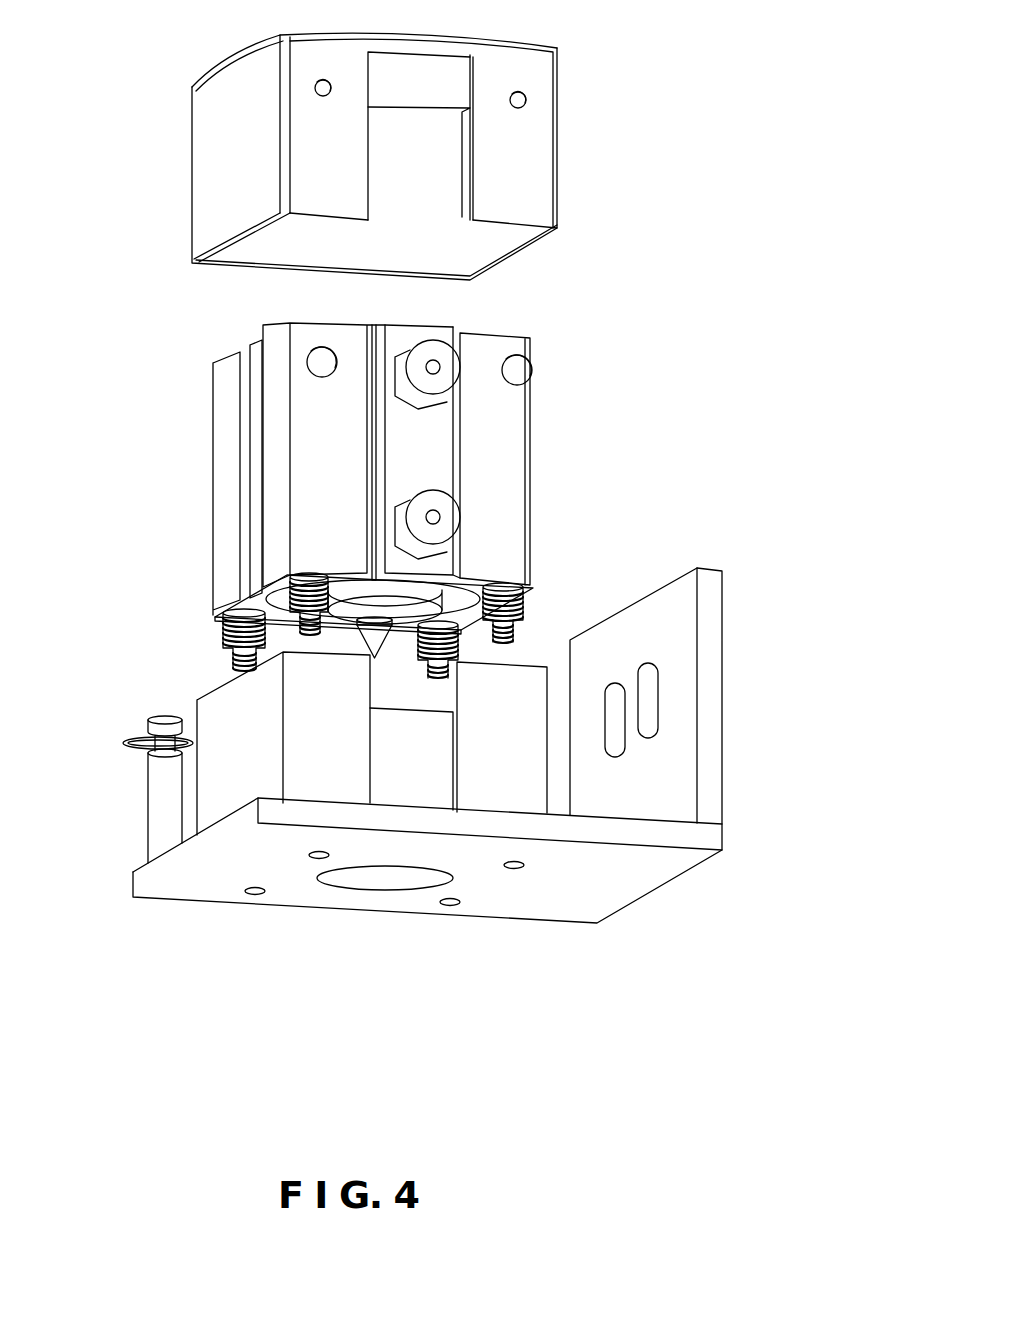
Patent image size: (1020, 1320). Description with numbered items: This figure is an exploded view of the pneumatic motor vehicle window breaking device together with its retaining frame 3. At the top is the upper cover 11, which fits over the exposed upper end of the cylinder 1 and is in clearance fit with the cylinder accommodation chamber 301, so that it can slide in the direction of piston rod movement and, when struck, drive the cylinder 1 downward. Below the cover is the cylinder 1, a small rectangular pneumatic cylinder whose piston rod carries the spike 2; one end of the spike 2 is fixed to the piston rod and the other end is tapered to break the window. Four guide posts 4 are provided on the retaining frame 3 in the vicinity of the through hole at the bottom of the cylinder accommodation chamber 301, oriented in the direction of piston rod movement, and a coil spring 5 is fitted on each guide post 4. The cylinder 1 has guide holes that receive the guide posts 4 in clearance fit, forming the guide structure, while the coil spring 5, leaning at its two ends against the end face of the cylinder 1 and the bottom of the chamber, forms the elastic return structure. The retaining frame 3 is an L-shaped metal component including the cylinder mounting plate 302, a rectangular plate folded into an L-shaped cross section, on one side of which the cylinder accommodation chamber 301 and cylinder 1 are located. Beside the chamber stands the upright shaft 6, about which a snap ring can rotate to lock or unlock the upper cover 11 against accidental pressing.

The upper cover 11 is at (545, 160).
The cylinder 1 is at (503, 460).
The coil spring 5 is at (225, 630).
The guide posts 4 is at (232, 655).
The spike 2 is at (360, 643).
The retaining frame 3 is at (479, 770).
The cylinder accommodation chamber 301 is at (430, 755).
The cylinder mounting plate 302 is at (387, 882).
The upright shaft 6 is at (158, 803).